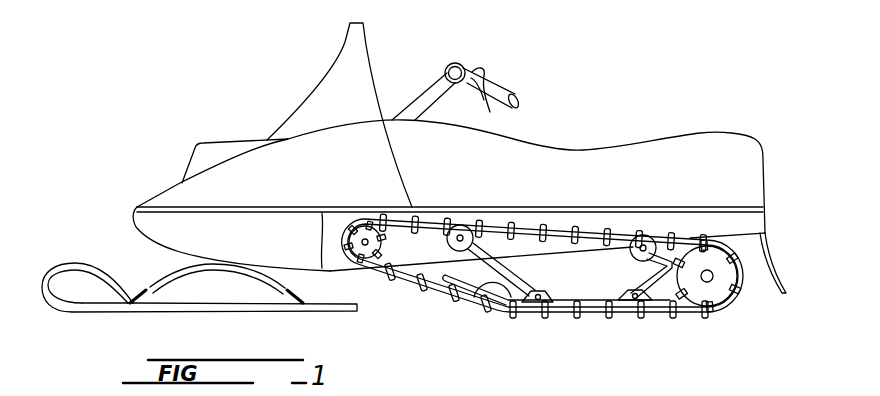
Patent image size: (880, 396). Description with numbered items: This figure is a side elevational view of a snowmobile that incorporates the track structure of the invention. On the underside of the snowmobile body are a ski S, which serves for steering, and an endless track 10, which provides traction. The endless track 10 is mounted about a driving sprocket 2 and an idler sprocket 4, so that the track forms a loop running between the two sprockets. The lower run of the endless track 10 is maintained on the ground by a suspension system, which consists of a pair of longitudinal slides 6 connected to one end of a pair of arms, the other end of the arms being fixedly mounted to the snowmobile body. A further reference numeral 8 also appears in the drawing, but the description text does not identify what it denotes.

The ski S is at (72, 245).
The driving sprocket 2 is at (373, 249).
The idler sprocket 4 is at (725, 275).
The longitudinal slides 6 is at (513, 302).
The rear suspension arm 8 is at (650, 276).
The endless track 10 is at (655, 330).